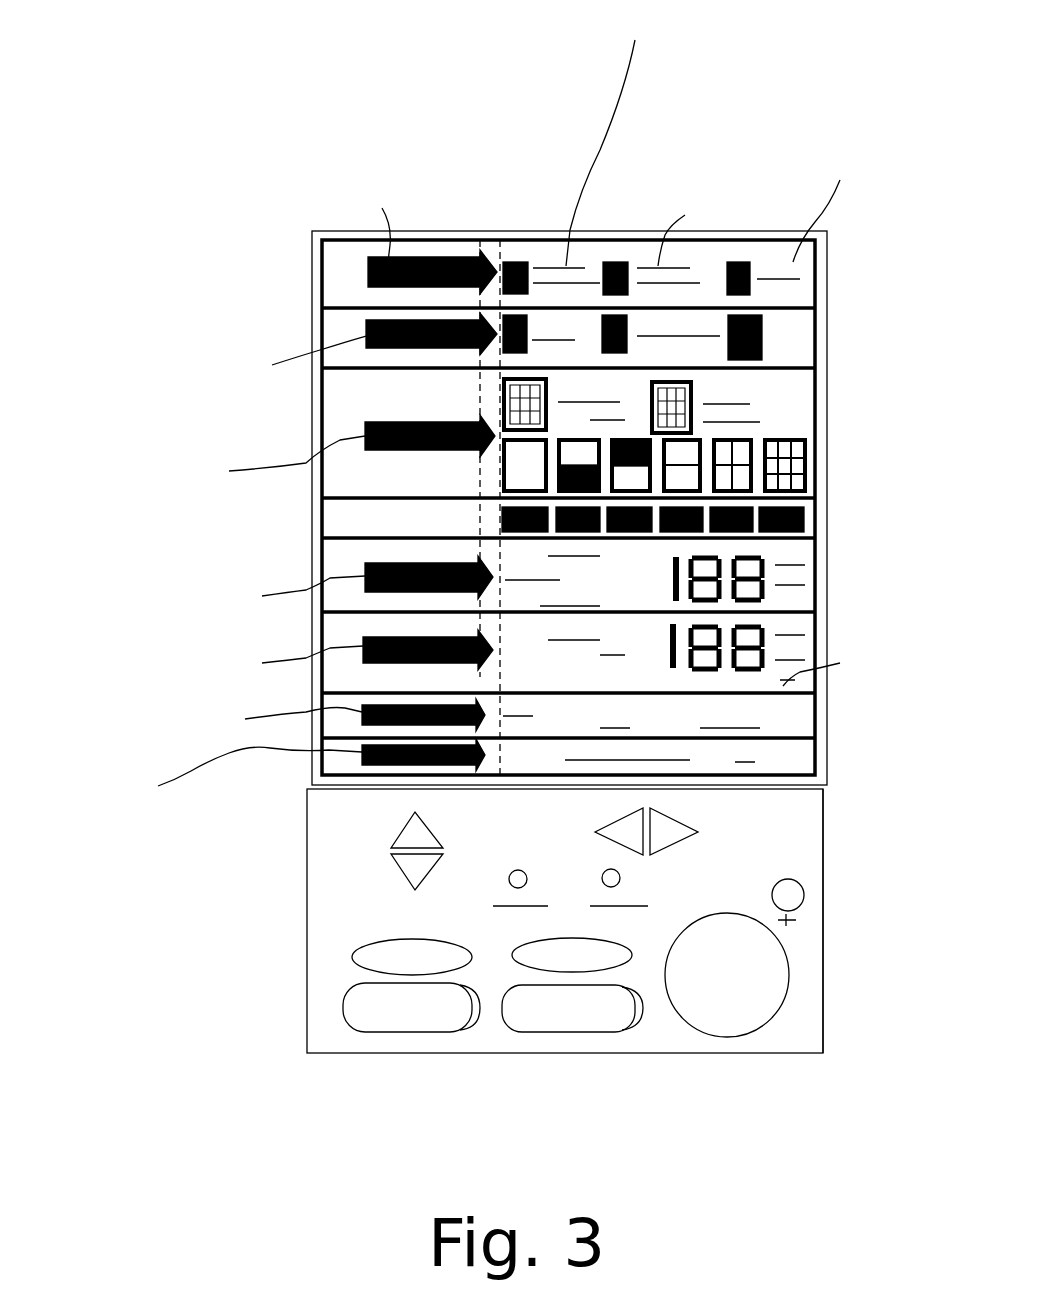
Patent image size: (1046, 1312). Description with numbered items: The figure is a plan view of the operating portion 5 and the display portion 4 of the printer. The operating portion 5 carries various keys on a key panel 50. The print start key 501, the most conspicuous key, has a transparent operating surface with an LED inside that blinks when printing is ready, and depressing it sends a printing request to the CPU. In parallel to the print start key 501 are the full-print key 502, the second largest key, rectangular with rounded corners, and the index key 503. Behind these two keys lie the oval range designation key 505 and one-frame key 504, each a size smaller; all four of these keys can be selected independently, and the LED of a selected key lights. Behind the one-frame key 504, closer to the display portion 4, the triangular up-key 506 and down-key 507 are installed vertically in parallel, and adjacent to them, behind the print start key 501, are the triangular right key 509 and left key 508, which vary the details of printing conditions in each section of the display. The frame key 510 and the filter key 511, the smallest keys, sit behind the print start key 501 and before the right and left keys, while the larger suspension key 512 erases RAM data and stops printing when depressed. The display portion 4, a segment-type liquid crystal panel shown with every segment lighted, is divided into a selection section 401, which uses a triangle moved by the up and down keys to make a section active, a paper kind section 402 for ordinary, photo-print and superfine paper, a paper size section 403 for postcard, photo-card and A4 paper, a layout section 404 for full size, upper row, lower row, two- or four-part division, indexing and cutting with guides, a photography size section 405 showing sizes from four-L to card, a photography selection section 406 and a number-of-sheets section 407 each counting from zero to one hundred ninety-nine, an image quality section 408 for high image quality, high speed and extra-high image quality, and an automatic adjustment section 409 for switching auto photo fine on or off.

The display portion 4 is at (613, 225).
The selection section 401 is at (497, 238).
The paper kind section 402 is at (817, 273).
The paper size section 403 is at (817, 334).
The layout section 404 is at (817, 414).
The photography size section 405 is at (817, 516).
The photography selection section 406 is at (817, 578).
The number-of-sheets section 407 is at (817, 649).
The image quality section 408 is at (817, 714).
The automatic adjustment section 409 is at (817, 754).
The operating portion 5 is at (827, 970).
The key panel 50 is at (825, 907).
The print start key 501 is at (727, 1037).
The full-print key 502 is at (572, 1030).
The index key 503 is at (407, 1032).
The one-frame key 504 is at (443, 970).
The range designation key 505 is at (605, 972).
The up-key 506 is at (397, 837).
The down-key 507 is at (400, 875).
The left key 508 is at (630, 805).
The right key 509 is at (697, 829).
The frame key 510 is at (520, 870).
The filter key 511 is at (620, 875).
The suspension key 512 is at (796, 888).